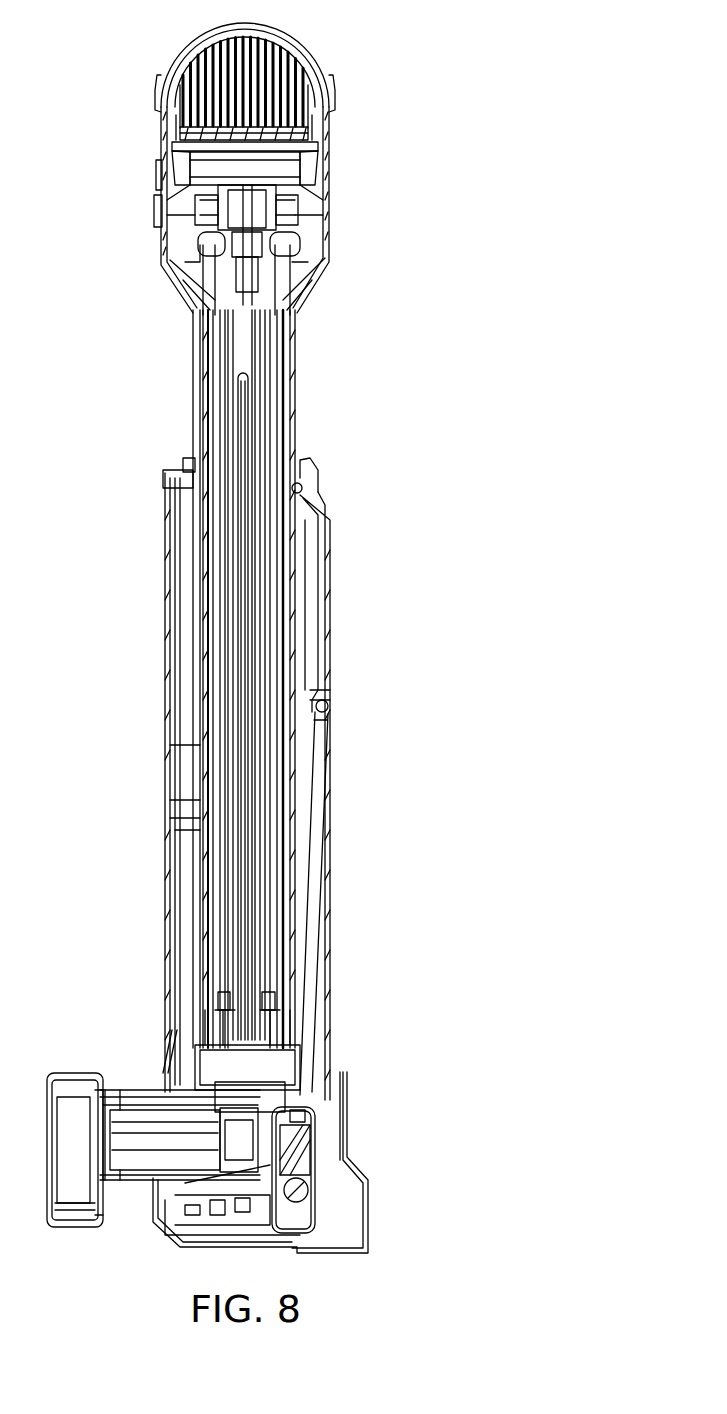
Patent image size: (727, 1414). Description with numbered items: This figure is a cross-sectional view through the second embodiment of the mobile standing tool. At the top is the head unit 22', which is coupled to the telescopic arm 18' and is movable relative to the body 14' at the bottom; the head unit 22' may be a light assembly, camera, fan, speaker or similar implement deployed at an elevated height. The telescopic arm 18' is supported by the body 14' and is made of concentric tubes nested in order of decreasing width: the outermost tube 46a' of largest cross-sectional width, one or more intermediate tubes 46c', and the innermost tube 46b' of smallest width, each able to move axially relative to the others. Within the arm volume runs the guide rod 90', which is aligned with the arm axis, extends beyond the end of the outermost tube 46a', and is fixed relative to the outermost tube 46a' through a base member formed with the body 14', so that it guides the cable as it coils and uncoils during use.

The head unit 22' is at (268, 169).
The telescopic arm 18' is at (264, 711).
The innermost tube 46b' is at (318, 706).
The intermediate tube 46c' is at (334, 675).
The guide rod 90' is at (317, 675).
The outermost tube 46a' is at (324, 992).
The body 14' is at (207, 1149).